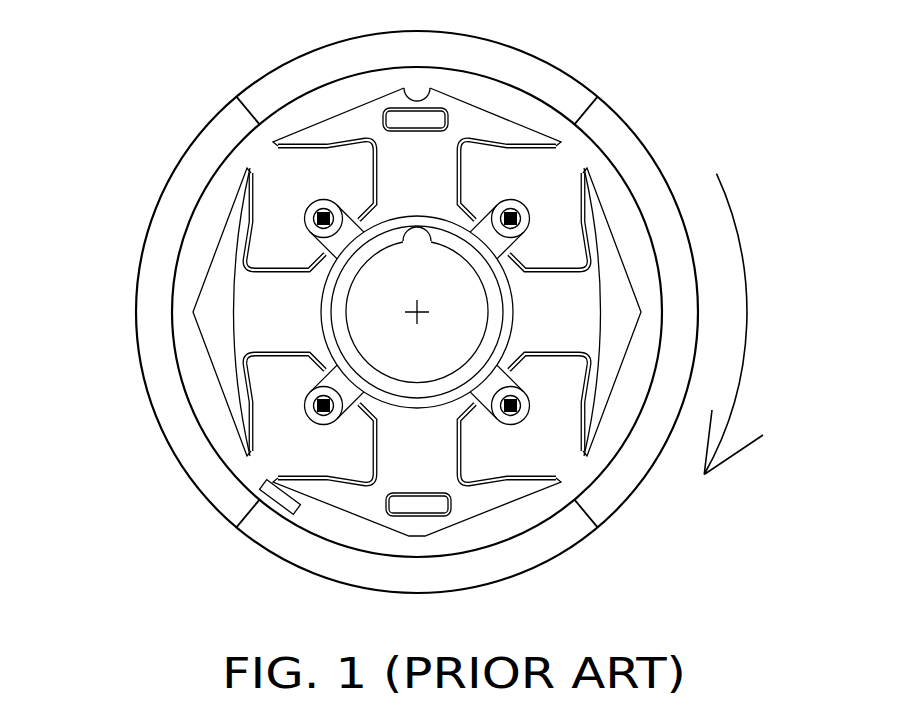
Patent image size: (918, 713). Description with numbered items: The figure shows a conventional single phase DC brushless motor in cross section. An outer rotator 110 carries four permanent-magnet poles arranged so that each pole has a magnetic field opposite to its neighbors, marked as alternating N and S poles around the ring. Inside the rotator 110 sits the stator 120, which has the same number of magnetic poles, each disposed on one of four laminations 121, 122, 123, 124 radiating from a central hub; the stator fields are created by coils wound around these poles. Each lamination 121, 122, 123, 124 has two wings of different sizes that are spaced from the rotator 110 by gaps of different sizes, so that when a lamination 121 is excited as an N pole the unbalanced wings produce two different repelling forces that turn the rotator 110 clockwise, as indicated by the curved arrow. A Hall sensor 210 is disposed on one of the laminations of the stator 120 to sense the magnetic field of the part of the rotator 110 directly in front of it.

The rotator 110 is at (160, 225).
The stator 120 is at (358, 312).
The lamination 121 is at (379, 515).
The lamination 122 is at (658, 343).
The lamination 123 is at (503, 130).
The lamination 124 is at (229, 300).
The Hall sensor 210 is at (250, 509).